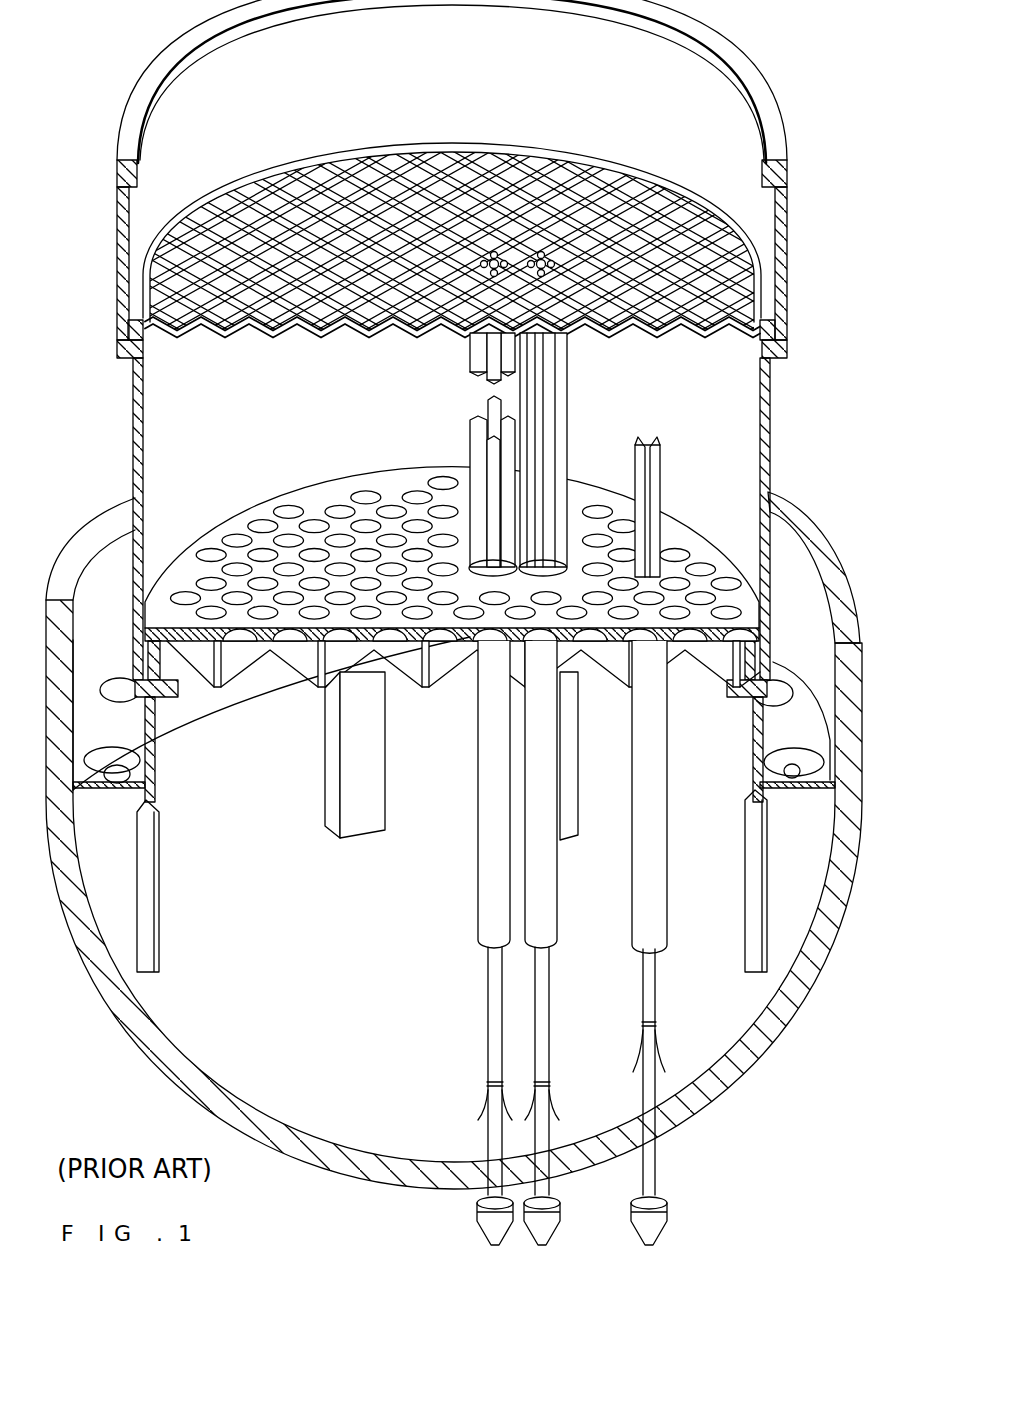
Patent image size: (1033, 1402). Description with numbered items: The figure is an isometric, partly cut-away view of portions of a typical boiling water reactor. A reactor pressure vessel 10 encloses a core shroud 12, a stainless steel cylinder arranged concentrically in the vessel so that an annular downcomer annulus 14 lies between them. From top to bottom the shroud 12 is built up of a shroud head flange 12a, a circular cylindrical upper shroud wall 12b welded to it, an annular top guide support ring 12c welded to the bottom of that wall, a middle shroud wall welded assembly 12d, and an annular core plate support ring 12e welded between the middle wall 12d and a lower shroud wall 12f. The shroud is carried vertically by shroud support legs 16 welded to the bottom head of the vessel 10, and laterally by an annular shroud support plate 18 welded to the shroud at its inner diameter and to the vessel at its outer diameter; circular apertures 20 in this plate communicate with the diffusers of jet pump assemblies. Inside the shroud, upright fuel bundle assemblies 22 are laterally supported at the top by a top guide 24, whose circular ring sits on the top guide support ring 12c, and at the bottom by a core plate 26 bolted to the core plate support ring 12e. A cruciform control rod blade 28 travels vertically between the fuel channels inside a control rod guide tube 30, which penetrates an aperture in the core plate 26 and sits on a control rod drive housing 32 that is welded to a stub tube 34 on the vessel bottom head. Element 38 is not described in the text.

The reactor pressure vessel 10 is at (205, 1090).
The core shroud 12 is at (416, 401).
The shroud head flange 12a is at (122, 140).
The upper shroud wall 12b is at (118, 220).
The top guide support ring 12c is at (118, 357).
The middle shroud wall welded assembly 12d is at (135, 486).
The core plate support ring 12e is at (162, 692).
The lower shroud wall 12f is at (154, 773).
The downcomer annulus 14 is at (120, 629).
The shroud support legs 16 is at (150, 882).
The shroud support plate 18 is at (810, 739).
The circular apertures 20 is at (113, 770).
The fuel bundle assemblies 22 is at (565, 387).
The top guide 24 is at (226, 333).
The core plate 26 is at (300, 493).
The control rod blade 28 is at (652, 480).
The control rod guide tube 30 is at (478, 812).
The control rod drive housing 32 is at (490, 978).
The stub tube 34 is at (487, 1100).
The column opening 38 is at (497, 595).